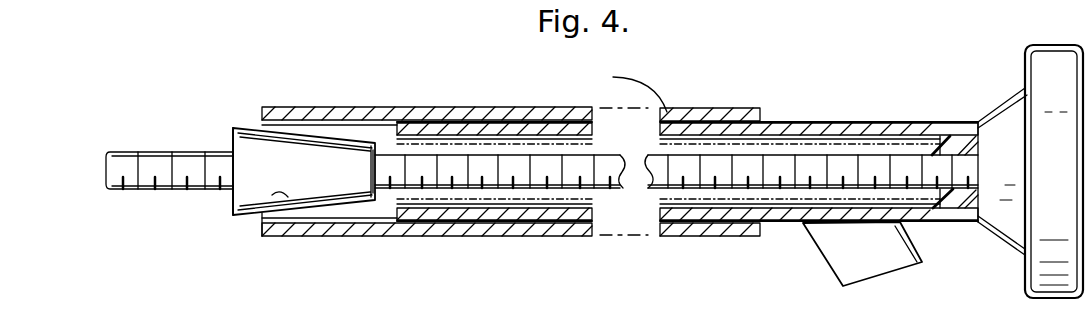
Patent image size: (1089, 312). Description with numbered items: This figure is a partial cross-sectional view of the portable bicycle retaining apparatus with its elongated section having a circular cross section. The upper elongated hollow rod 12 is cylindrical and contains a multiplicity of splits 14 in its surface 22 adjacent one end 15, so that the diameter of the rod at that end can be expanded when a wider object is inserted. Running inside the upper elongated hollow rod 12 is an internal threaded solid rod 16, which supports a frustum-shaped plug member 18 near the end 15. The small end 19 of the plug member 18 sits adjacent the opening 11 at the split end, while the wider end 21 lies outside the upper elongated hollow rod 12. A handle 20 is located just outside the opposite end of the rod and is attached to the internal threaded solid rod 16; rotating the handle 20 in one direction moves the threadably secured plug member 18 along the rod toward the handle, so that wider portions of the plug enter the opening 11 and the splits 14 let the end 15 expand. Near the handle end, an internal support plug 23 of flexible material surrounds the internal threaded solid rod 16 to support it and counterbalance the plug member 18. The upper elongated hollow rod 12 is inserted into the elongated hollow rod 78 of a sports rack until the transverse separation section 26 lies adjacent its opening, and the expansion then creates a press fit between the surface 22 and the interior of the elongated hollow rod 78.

The opening 11 is at (286, 204).
The upper elongated hollow rod 12 is at (450, 128).
The splits 14 is at (327, 123).
The end 15 is at (258, 217).
The internal threaded solid rod 16 is at (490, 180).
The plug member 18 is at (305, 179).
The small end 19 is at (375, 172).
The handle 20 is at (1069, 158).
The wider end 21 is at (232, 198).
The surface 22 is at (518, 127).
The internal support plug 23 is at (955, 200).
The transverse separation section 26 is at (880, 257).
The elongated hollow rod 78 is at (560, 113).